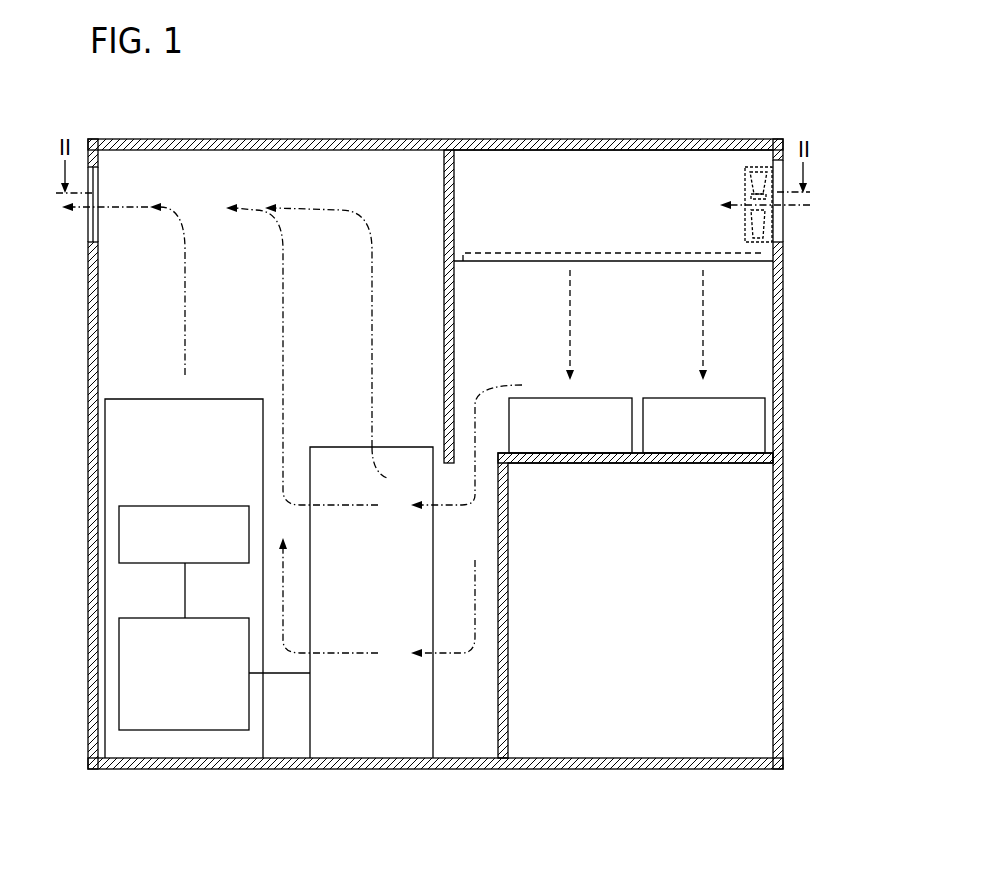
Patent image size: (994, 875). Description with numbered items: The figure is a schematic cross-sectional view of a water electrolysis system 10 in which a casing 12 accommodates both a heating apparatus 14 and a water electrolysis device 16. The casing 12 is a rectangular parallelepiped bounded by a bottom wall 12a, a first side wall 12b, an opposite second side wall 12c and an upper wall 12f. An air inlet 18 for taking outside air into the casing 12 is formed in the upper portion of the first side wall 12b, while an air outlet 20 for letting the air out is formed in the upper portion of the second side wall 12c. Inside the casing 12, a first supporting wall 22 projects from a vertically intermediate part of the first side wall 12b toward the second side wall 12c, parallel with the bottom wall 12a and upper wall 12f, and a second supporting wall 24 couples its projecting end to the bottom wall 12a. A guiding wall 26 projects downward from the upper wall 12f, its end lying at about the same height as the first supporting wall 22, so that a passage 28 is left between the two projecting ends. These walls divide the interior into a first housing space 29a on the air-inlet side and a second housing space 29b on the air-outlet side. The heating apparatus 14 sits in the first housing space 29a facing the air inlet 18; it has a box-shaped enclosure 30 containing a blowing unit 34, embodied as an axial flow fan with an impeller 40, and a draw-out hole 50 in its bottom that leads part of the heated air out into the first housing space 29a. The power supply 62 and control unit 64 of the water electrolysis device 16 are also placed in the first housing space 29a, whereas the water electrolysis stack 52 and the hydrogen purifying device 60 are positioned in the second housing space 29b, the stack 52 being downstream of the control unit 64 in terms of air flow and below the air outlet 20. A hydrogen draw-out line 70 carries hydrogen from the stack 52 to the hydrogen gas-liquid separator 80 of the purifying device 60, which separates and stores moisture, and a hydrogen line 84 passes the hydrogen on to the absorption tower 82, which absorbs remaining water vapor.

The water electrolysis system 10 is at (294, 79).
The casing 12 is at (435, 438).
The bottom wall 12a is at (287, 760).
The first side wall 12b is at (773, 641).
The second side wall 12c is at (97, 300).
The upper wall 12f is at (217, 139).
The heating apparatus 14 is at (539, 132).
The water electrolysis device 16 is at (129, 379).
The air inlet 18 is at (777, 225).
The air outlet 20 is at (100, 181).
The first supporting wall 22 is at (615, 467).
The second supporting wall 24 is at (508, 607).
The guiding wall 26 is at (444, 285).
The passage 28 is at (492, 470).
The first housing space 29a is at (497, 326).
The second housing space 29b is at (376, 175).
The enclosure 30 is at (666, 160).
The blowing unit 34 is at (745, 176).
The impeller 40 is at (750, 220).
The draw-out hole 50 is at (497, 252).
The water electrolysis stack 52 is at (382, 736).
The hydrogen purifying device 60 is at (228, 399).
The power supply 62 is at (727, 398).
The control unit 64 is at (603, 398).
The hydrogen draw-out line 70 is at (283, 676).
The hydrogen gas-liquid separator 80 is at (213, 618).
The absorption tower 82 is at (238, 505).
The hydrogen line 84 is at (184, 596).